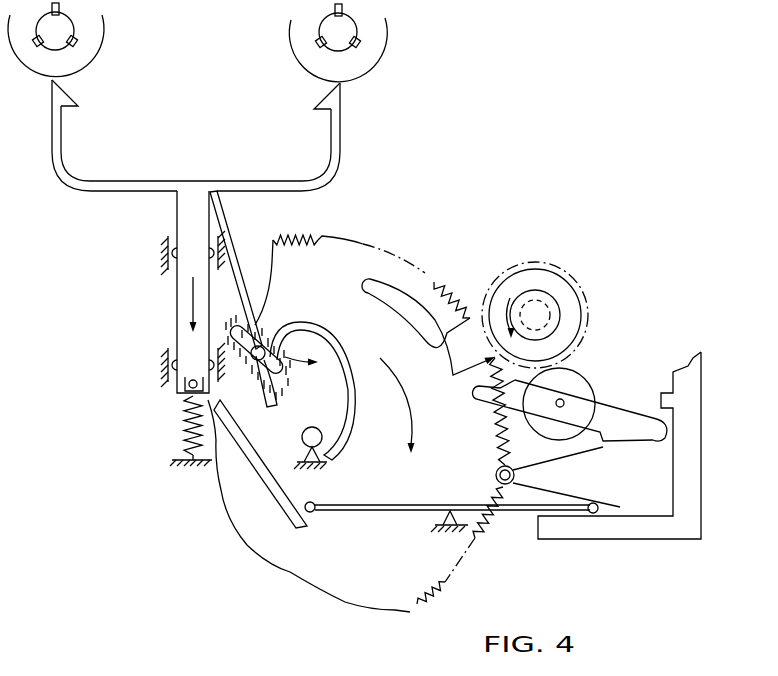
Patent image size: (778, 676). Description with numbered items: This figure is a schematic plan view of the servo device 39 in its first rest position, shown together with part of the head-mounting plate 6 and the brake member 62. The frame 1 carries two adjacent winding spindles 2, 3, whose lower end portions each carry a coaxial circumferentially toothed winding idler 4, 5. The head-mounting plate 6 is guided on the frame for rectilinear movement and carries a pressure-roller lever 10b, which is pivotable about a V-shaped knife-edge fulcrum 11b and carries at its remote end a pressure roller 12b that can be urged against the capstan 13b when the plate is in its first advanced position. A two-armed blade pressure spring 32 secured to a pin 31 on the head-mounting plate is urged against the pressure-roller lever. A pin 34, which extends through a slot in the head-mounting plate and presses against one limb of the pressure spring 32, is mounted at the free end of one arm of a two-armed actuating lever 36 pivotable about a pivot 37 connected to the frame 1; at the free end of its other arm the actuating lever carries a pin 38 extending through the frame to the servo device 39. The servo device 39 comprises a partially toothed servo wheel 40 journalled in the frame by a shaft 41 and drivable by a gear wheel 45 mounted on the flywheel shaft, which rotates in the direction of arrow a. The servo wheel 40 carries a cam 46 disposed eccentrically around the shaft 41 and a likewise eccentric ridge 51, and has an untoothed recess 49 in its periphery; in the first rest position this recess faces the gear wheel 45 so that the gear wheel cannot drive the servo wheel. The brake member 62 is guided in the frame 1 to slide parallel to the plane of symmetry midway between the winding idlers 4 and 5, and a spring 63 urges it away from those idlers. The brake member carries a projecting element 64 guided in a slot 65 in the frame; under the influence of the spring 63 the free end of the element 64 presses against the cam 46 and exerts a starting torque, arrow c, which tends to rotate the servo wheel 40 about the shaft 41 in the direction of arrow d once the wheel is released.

The frame 1 is at (170, 252).
The winding spindle 2 is at (60, 42).
The winding spindle 3 is at (343, 45).
The winding idler 4 is at (96, 37).
The winding idler 5 is at (376, 43).
The head-mounting plate 6 is at (695, 525).
The pressure-roller lever 10b is at (633, 430).
The knife-edge fulcrum 11b is at (667, 428).
The pressure roller 12b is at (583, 390).
The capstan 13b is at (540, 312).
The pin 31 is at (495, 475).
The pressure spring 32 is at (537, 487).
The pin 34 is at (593, 514).
The actuating lever 36 is at (380, 511).
The pivot 37 is at (440, 518).
The pin 38 is at (314, 510).
The servo device 39 is at (208, 505).
The servo wheel 40 is at (339, 248).
The shaft 41 is at (303, 437).
The gear wheel 45 is at (540, 286).
The cam 46 is at (352, 393).
The recess 49 is at (460, 340).
The ridge 51 is at (274, 499).
The brake member 62 is at (187, 212).
The spring 63 is at (183, 415).
The projecting element 64 is at (240, 283).
The slot 65 is at (279, 370).
The arrow a is at (508, 296).
The arrow c is at (290, 355).
The arrow d is at (412, 415).